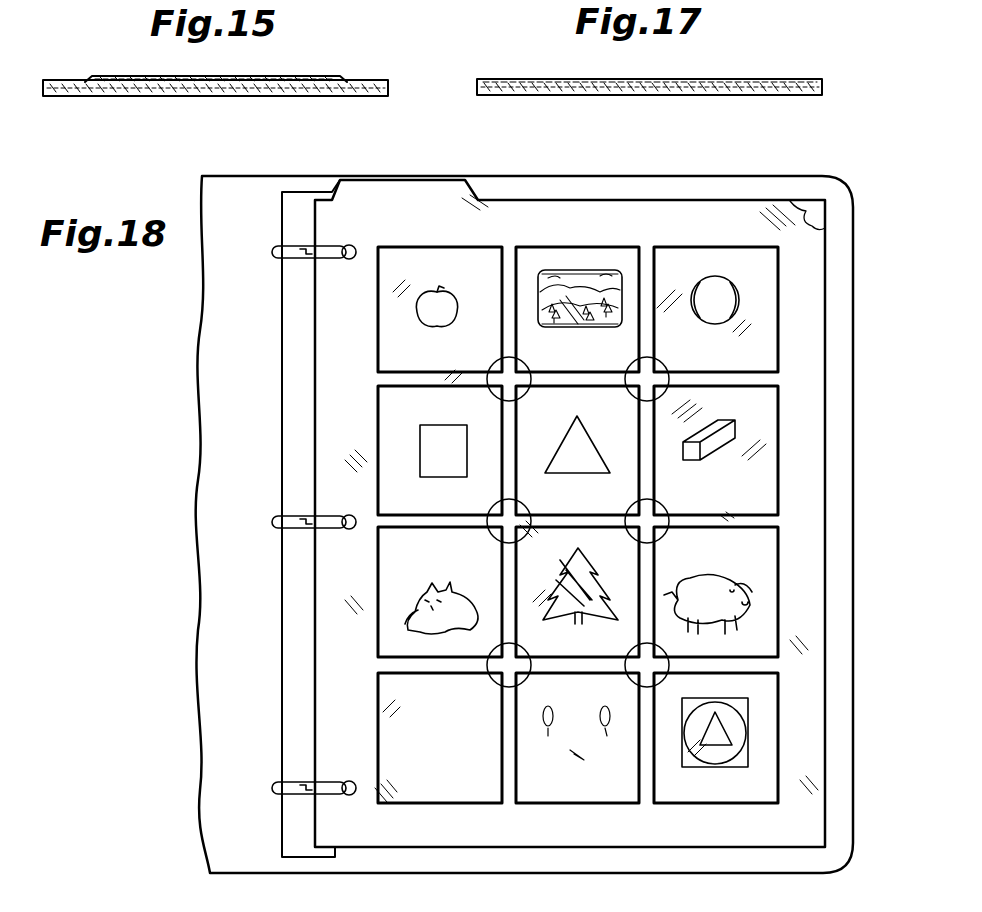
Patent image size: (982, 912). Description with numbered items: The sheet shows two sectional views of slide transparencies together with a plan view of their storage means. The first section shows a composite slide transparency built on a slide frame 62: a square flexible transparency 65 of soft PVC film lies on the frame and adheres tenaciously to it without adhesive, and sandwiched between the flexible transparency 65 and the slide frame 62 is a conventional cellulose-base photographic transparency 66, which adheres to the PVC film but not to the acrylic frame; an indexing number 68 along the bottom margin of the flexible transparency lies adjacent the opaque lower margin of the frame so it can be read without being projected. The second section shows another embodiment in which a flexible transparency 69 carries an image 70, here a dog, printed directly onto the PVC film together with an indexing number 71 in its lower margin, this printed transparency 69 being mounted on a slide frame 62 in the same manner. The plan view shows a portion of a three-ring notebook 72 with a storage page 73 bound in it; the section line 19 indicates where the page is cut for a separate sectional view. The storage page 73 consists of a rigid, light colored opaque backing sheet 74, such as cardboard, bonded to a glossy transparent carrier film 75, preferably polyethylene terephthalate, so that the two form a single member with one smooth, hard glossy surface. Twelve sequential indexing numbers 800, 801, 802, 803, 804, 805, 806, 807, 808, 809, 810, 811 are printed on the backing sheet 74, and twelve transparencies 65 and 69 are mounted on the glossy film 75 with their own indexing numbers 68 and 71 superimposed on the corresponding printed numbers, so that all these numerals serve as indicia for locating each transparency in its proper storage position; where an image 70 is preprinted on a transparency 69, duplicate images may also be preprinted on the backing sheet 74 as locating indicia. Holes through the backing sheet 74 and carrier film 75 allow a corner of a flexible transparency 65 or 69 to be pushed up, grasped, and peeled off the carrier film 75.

In FIG. 18, the section line 19 is at (314, 304).
In FIG. 15, the slide frame 62 is at (325, 100).
In FIG. 17, the slide frame 62 is at (775, 100).
In FIG. 15, the flexible transparency 65 is at (358, 78).
In FIG. 18, the flexible transparency 65 is at (578, 256).
In FIG. 15, the photographic transparency 66 is at (308, 80).
In FIG. 18, the photographic transparency 66 is at (560, 270).
In FIG. 18, the indexing number 68 is at (586, 358).
In FIG. 17, the flexible transparency 69 is at (770, 80).
In FIG. 18, the flexible transparency 69 is at (609, 556).
In FIG. 18, the printed image 70 is at (424, 310).
In FIG. 18, the indexing number 71 is at (577, 576).
In FIG. 18, the three-ring notebook 72 is at (245, 174).
In FIG. 18, the storage page 73 is at (552, 198).
In FIG. 18, the rigid backing sheet 74 is at (815, 205).
In FIG. 18, the glossy transparent carrier film 75 is at (772, 210).
In FIG. 18, the indexing number 800 is at (440, 310).
In FIG. 18, the indexing number 801 is at (577, 310).
In FIG. 18, the indexing number 802 is at (716, 310).
In FIG. 18, the indexing number 803 is at (440, 450).
In FIG. 18, the indexing number 804 is at (577, 450).
In FIG. 18, the indexing number 805 is at (716, 450).
In FIG. 18, the indexing number 806 is at (440, 592).
In FIG. 18, the indexing number 807 is at (577, 592).
In FIG. 18, the indexing number 808 is at (716, 592).
In FIG. 18, the indexing number 809 is at (440, 738).
In FIG. 18, the indexing number 810 is at (577, 738).
In FIG. 18, the indexing number 811 is at (716, 738).